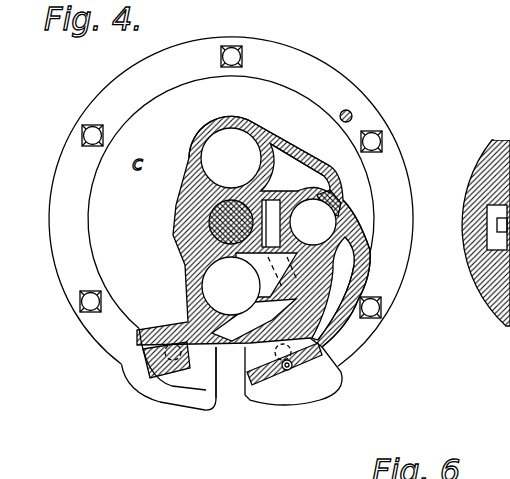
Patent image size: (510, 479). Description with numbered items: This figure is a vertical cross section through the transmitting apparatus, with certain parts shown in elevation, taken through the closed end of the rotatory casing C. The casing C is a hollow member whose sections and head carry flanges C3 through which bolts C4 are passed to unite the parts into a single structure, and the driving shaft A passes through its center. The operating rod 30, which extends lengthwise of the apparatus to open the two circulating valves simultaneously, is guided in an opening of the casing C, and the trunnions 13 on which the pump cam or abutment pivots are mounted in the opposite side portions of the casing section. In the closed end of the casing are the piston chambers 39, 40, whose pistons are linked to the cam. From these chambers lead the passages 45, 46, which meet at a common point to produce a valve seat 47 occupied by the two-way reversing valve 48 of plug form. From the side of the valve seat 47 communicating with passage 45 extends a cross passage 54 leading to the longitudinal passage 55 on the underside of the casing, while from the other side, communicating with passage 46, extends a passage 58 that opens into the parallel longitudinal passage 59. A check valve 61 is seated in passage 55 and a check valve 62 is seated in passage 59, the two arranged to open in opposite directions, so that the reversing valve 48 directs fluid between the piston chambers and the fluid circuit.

The casing C is at (258, 80).
The flanges C3 is at (105, 333).
The bolts C4 is at (84, 132).
The operating rod 30 is at (352, 112).
The driving shaft A is at (218, 224).
The passage 58 is at (268, 203).
The piston chamber 40 is at (227, 140).
The piston chamber 39 is at (203, 284).
The passage 46 is at (282, 172).
The valve seat 47 is at (340, 194).
The two-way reversing valve 48 is at (345, 226).
The cross passage 54 is at (350, 272).
The passage 45 is at (347, 318).
The longitudinal passage 59 is at (152, 347).
The check valve 62 is at (173, 362).
The check valve 61 is at (340, 371).
The longitudinal passage 55 is at (265, 372).
The trunnions 13 is at (490, 228).